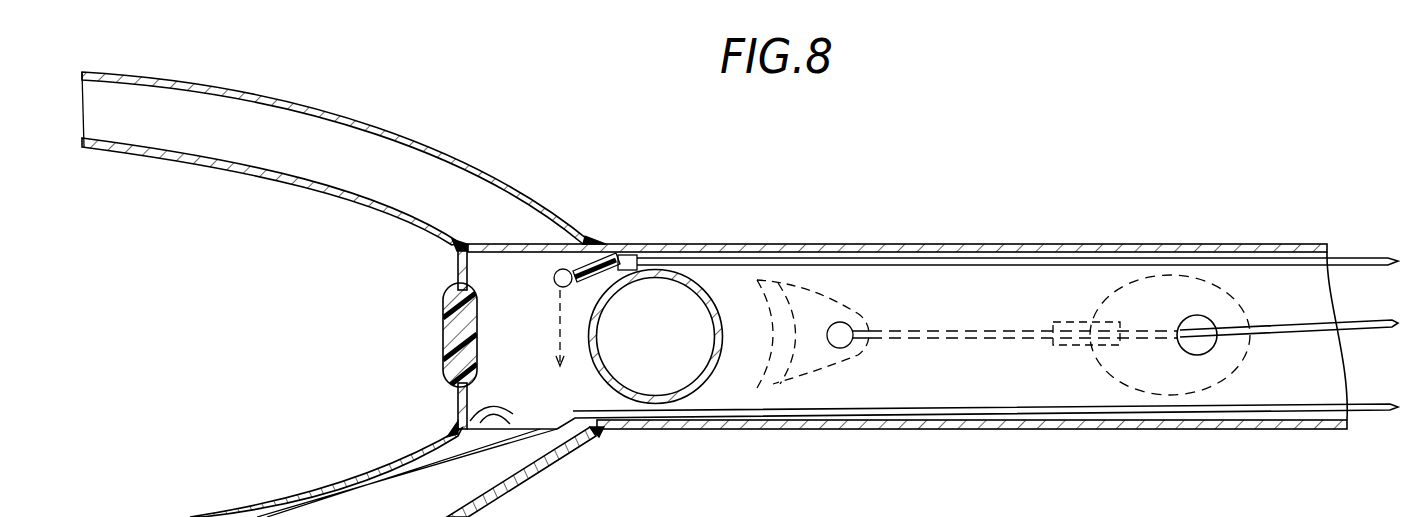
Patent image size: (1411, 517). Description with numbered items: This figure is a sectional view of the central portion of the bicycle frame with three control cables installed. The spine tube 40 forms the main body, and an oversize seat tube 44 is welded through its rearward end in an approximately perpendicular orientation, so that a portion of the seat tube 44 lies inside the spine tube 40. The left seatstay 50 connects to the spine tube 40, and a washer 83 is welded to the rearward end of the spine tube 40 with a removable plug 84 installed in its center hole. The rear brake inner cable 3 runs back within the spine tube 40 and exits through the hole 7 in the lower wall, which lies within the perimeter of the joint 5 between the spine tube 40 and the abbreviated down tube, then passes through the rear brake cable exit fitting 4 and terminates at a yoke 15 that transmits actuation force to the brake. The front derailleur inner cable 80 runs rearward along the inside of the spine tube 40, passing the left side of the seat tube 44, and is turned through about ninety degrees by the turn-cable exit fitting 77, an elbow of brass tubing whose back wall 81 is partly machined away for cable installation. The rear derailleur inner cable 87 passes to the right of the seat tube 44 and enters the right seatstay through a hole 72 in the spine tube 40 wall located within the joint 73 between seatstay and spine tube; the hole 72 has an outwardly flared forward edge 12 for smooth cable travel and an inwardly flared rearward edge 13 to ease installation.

The left seatstay 50 is at (376, 115).
The spine tube 40 is at (1012, 244).
The front derailleur inner cable 80 is at (1353, 258).
The rear derailleur inner cable 87 is at (1385, 402).
The washer 83 is at (458, 266).
The removable plug 84 is at (443, 322).
The seat tube 44 is at (594, 338).
The back wall 81 is at (560, 262).
The turn-cable exit fitting 77 is at (555, 285).
The yoke 15 is at (828, 368).
The rear brake cable exit fitting 4 is at (1070, 322).
The hole 7 is at (1183, 355).
The joint 5 is at (1247, 353).
The rear brake inner cable 3 is at (1370, 297).
The inwardly flared rearward edge 13 is at (458, 418).
The outwardly flared forward edge 12 is at (567, 437).
The joint 73 is at (598, 433).
The hole 72 is at (530, 415).